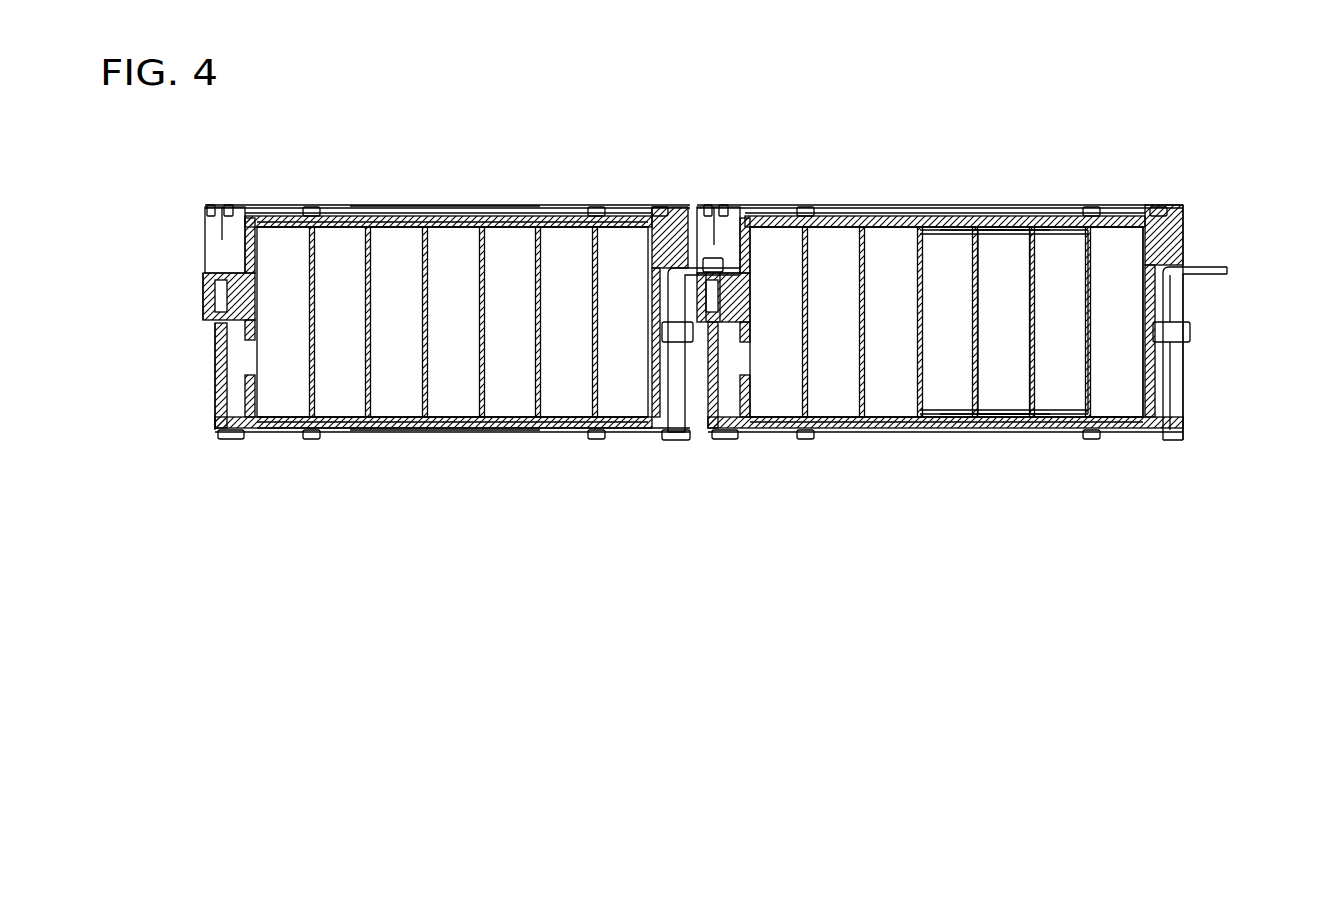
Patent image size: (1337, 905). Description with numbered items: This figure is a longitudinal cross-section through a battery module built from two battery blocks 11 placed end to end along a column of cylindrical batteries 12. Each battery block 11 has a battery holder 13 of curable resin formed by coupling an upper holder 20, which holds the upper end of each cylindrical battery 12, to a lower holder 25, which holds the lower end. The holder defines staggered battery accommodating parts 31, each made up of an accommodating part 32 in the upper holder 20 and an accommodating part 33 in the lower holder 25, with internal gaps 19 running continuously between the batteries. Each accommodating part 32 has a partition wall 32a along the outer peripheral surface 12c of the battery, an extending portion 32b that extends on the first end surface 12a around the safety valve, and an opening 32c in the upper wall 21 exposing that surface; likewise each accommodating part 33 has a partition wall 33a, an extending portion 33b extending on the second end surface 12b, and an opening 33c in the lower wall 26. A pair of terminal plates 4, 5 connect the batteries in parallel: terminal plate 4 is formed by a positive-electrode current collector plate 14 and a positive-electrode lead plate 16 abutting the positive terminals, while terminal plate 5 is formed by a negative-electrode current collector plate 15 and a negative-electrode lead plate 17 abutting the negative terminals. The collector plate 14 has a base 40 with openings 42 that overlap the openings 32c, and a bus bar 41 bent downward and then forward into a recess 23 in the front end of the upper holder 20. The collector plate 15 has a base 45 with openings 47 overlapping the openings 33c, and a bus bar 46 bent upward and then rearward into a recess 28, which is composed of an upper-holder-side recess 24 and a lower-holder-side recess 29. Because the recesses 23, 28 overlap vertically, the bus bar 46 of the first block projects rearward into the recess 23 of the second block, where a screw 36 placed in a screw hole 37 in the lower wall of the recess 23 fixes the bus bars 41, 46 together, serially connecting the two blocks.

The terminal plate 4 is at (597, 135).
The terminal plate 5 is at (535, 500).
The battery block 11 is at (268, 440).
The cylindrical battery 12 is at (1131, 248).
The first end surface 12a is at (1120, 215).
The second end surface 12b is at (1110, 428).
The outer peripheral surface 12c is at (1087, 290).
The battery holder 13 is at (140, 287).
The positive-electrode current collector plate 14 is at (537, 218).
The negative-electrode current collector plate 15 is at (480, 428).
The positive-electrode lead plate 16 is at (577, 218).
The negative-electrode lead plate 17 is at (512, 428).
The internal gap 19 is at (915, 303).
The upper holder 20 is at (203, 311).
The upper wall 21 is at (430, 218).
The recess 23 is at (216, 240).
The upper-holder-side recess 24 is at (1177, 305).
The lower holder 25 is at (213, 378).
The lower wall 26 is at (424, 430).
The recess 28 is at (673, 430).
The lower-holder-side recess 29 is at (1177, 375).
The battery accommodating part 31 is at (1018, 328).
The accommodating part 32 is at (1048, 130).
The partition wall 32a is at (962, 233).
The extending portion 32b is at (985, 225).
The opening 32c is at (1015, 225).
The accommodating part 33 is at (1055, 500).
The partition wall 33a is at (962, 425).
The extending portion 33b is at (990, 420).
The opening 33c is at (1010, 425).
The screw 36 is at (647, 212).
The screw hole 37 is at (773, 215).
The base 40 is at (311, 207).
The bus bar 41 is at (240, 240).
The opening 42 is at (352, 215).
The base 45 is at (311, 436).
The bus bar 46 is at (683, 405).
The opening 47 is at (350, 430).